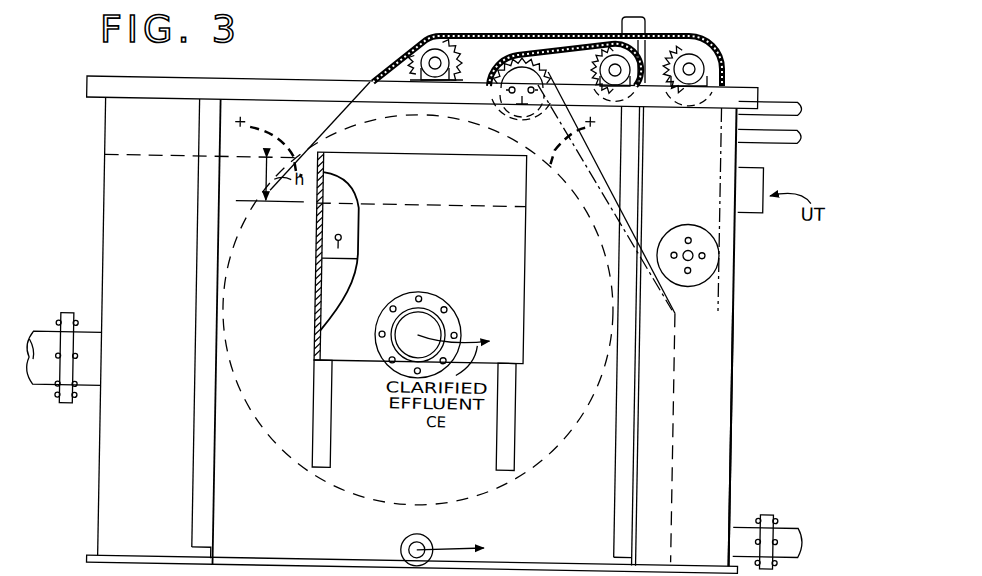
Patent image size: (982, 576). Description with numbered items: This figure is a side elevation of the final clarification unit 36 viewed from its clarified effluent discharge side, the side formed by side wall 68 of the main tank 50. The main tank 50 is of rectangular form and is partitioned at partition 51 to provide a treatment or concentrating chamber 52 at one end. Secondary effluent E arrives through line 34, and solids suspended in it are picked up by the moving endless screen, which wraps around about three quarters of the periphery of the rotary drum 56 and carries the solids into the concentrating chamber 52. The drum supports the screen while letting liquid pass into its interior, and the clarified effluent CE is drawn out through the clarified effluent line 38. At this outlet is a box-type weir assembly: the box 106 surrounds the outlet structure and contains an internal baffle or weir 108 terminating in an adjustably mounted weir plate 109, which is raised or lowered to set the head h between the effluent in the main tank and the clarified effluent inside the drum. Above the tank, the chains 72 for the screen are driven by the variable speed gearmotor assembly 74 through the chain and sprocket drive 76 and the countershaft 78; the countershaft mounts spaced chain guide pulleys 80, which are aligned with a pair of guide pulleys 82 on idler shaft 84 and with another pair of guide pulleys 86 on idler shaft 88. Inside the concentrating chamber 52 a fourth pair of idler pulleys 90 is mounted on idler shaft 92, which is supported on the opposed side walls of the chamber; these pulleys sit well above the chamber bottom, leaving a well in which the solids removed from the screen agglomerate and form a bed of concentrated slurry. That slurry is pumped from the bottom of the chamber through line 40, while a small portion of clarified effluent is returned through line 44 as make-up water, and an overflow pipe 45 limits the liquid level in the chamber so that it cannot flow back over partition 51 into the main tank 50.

The final clarification unit 36 is at (86, 110).
The main tank 50 is at (102, 165).
The side wall 68 is at (132, 281).
The line 34 is at (95, 388).
The rotary drum 56 is at (277, 458).
The countershaft 78 is at (518, 109).
The box 106 is at (434, 253).
The internal baffle or weir 108 is at (330, 268).
The weir plate 109 is at (357, 220).
The clarified effluent line 38 is at (432, 308).
The concentrating chamber 52 is at (683, 338).
The partition 51 is at (678, 394).
The line 44 is at (785, 92).
The overflow pipe 45 is at (772, 130).
The idler pulleys 90 is at (716, 231).
The idler shaft 92 is at (700, 252).
The line 40 is at (799, 520).
The guide pulleys 82 is at (426, 38).
The idler shaft 84 is at (432, 63).
The chain guide pulleys 80 is at (522, 67).
The chain and sprocket drive 76 is at (578, 47).
The variable speed gearmotor assembly 74 is at (647, 20).
The chains 72 is at (673, 42).
The guide pulleys 86 is at (705, 54).
The idler shaft 88 is at (692, 70).